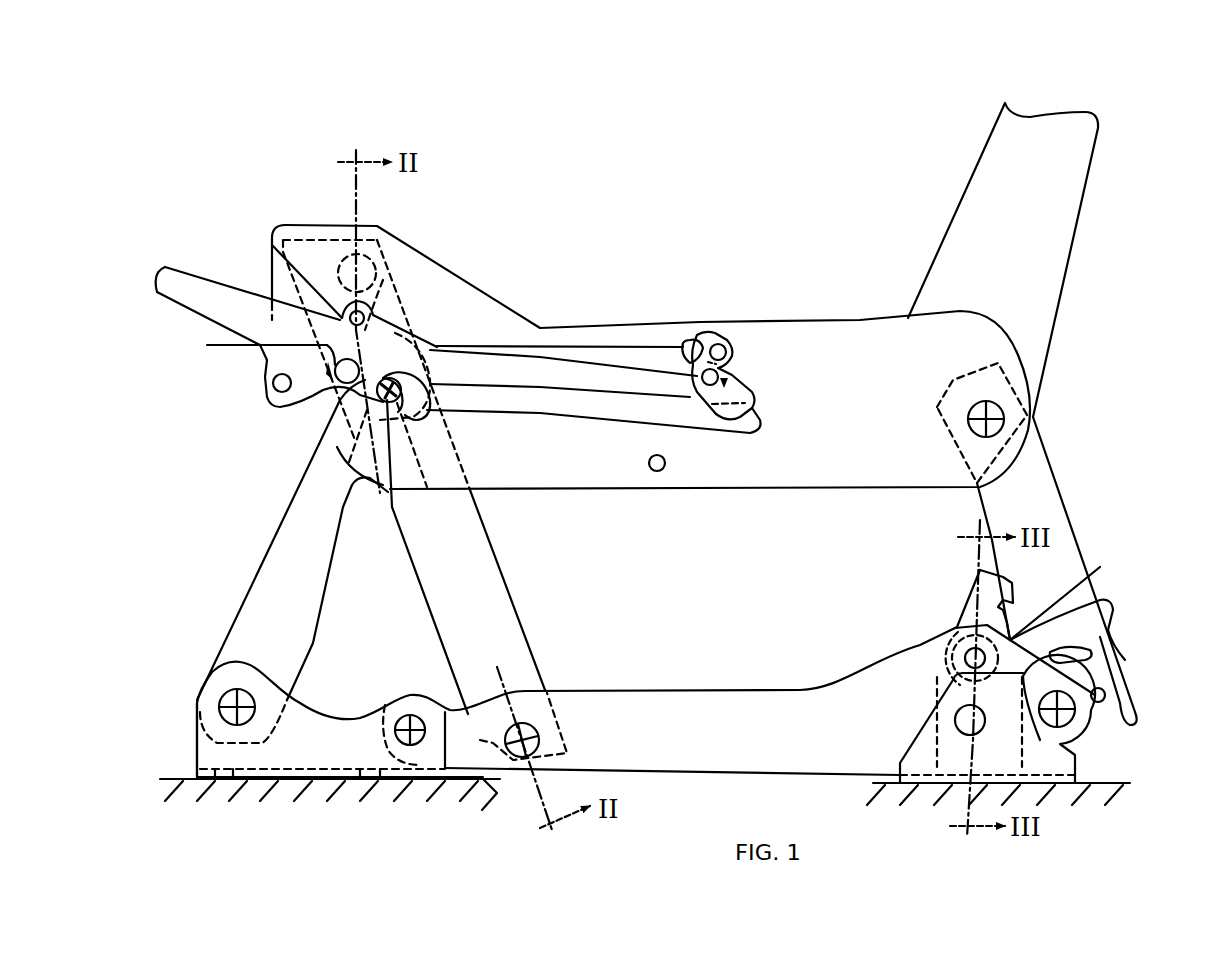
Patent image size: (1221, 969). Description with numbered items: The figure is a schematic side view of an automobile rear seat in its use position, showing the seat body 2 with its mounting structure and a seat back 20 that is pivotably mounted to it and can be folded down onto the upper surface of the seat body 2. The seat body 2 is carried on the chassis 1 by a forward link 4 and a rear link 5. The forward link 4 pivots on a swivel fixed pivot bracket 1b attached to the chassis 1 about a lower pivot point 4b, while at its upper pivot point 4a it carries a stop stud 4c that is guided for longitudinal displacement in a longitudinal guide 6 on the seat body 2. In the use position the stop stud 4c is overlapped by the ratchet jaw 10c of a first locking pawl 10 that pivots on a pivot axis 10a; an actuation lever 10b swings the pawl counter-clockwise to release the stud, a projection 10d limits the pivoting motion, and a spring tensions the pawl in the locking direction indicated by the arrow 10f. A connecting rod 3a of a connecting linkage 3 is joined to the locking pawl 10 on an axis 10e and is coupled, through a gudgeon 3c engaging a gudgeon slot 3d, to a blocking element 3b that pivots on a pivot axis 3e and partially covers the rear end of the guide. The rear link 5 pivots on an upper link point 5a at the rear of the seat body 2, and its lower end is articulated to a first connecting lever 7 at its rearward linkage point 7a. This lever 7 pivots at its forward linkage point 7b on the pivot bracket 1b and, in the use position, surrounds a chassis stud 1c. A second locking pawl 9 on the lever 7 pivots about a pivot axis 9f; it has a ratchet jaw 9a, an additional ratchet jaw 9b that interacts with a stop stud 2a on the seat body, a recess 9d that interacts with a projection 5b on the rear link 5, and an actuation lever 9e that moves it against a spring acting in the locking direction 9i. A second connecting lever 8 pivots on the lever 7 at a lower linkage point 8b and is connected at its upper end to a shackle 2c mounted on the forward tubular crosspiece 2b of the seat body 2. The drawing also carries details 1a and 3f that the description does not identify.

The chassis 1 is at (175, 777).
The base rear bracket 1a is at (1073, 757).
The swivel fixed pivot bracket 1b is at (197, 738).
The stud 1c is at (960, 690).
The seat body 2 is at (860, 312).
The stop stud 2a is at (666, 463).
The forward tubular crosspiece 2b is at (373, 275).
The shackle 2c is at (393, 277).
The connecting linkage 3 is at (750, 300).
The connecting rod 3a is at (607, 340).
The blocking element 3b is at (757, 395).
The gudgeon 3c is at (730, 338).
The gudgeon slot 3d is at (700, 338).
The pivot axis 3e is at (682, 430).
The pivot pin 3f is at (733, 373).
The forward link 4 is at (267, 545).
The upper pivot point 4a is at (470, 287).
The lower pivot point 4b is at (222, 693).
The stop stud 4c is at (392, 503).
The rear link 5 is at (1070, 485).
The upper link point 5a is at (993, 420).
The projection 5b is at (1105, 697).
The longitudinal guide 6 is at (597, 420).
The first connecting lever 7 is at (722, 689).
The rearward linkage point 7a is at (1067, 717).
The forward linkage point 7b is at (404, 705).
The second connecting lever 8 is at (522, 628).
The lower linkage point 8b is at (537, 723).
The second locking pawl 9 is at (1102, 595).
The ratchet jaw 9a is at (940, 625).
The additional ratchet jaw 9b is at (1013, 607).
The recess 9d is at (1105, 625).
The actuation lever 9e is at (1127, 663).
The pivot axis 9f is at (960, 603).
The locking direction 9i is at (1100, 567).
The first locking pawl 10 is at (263, 375).
The pivot axis 10a is at (212, 346).
The actuation lever 10b is at (157, 292).
The ratchet jaw 10c is at (407, 333).
The projection 10d is at (273, 407).
The axis 10e is at (272, 244).
The arrow 10f is at (280, 383).
The seat back 20 is at (1068, 250).